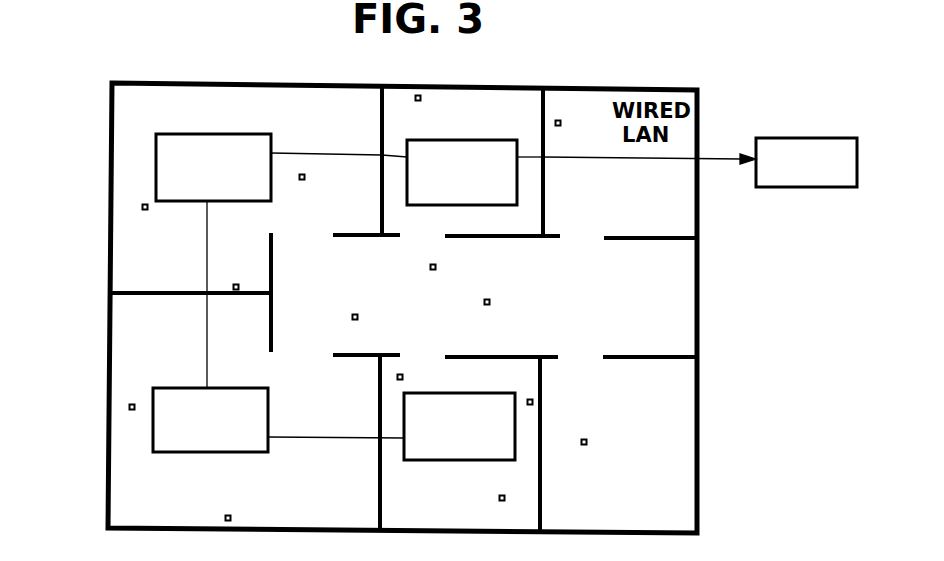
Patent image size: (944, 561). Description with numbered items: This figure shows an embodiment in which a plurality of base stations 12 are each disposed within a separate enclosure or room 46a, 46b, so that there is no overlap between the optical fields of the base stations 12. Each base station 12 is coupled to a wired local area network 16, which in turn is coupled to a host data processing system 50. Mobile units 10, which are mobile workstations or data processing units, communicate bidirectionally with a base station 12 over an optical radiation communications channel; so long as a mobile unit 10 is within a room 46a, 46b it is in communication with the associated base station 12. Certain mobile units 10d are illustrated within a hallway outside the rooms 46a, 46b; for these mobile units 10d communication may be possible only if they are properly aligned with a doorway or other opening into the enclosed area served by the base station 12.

The mobile unit 10 is at (148, 210).
The mobile unit in hallway 10d is at (437, 267).
The base station 12 is at (213, 134).
The wired local area network 16 is at (723, 152).
The room 46a is at (112, 246).
The room 46b is at (112, 337).
The host data processing system 50 is at (800, 138).